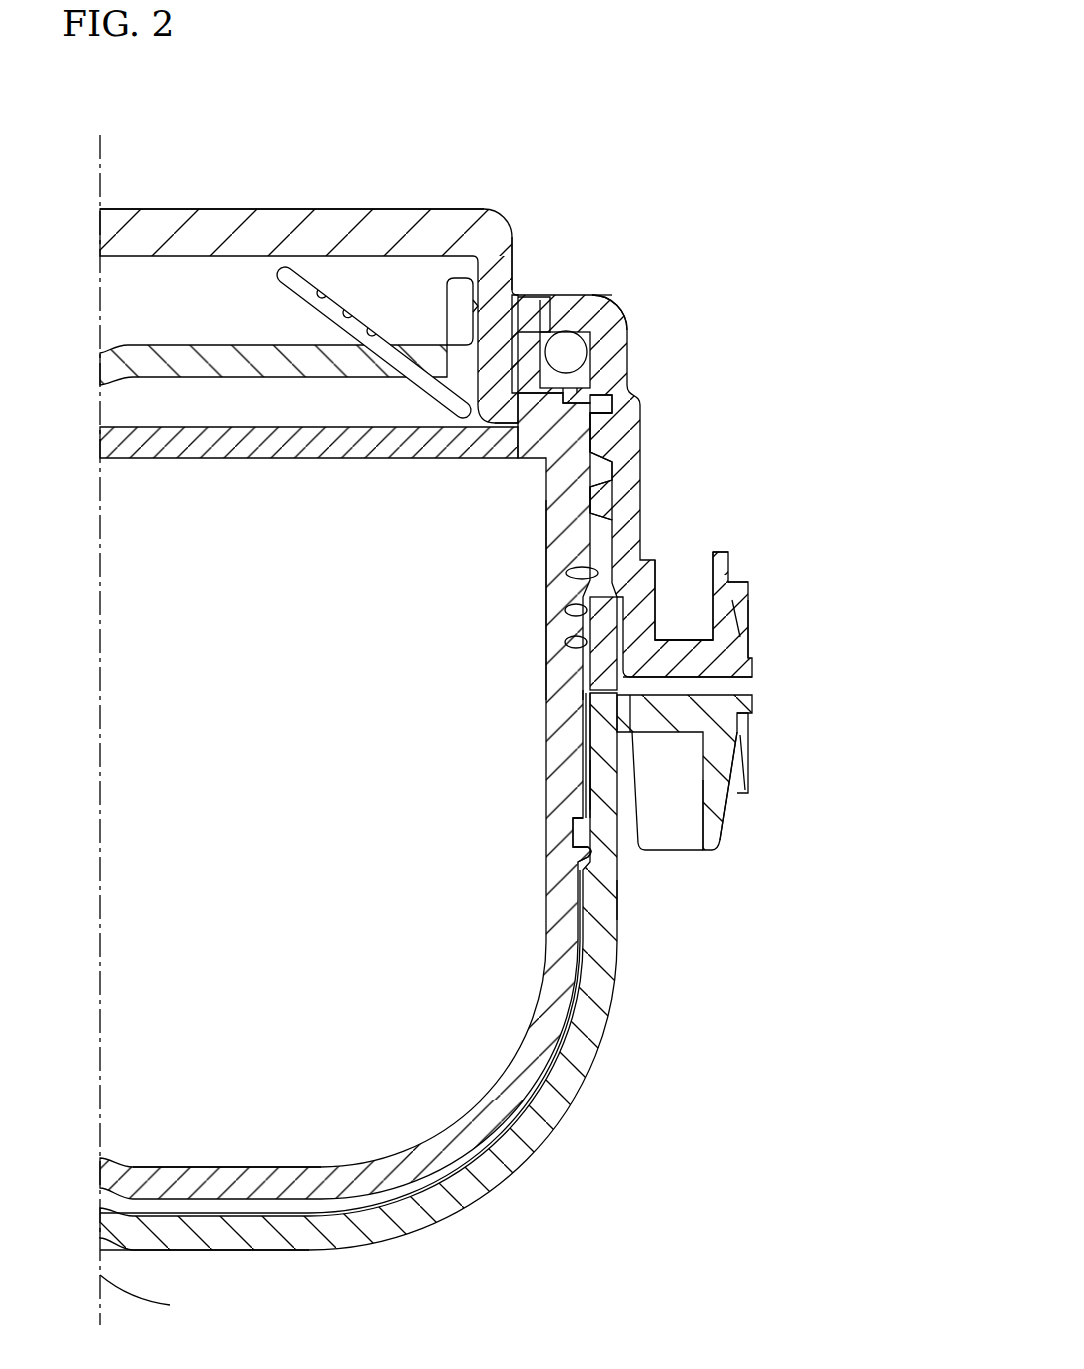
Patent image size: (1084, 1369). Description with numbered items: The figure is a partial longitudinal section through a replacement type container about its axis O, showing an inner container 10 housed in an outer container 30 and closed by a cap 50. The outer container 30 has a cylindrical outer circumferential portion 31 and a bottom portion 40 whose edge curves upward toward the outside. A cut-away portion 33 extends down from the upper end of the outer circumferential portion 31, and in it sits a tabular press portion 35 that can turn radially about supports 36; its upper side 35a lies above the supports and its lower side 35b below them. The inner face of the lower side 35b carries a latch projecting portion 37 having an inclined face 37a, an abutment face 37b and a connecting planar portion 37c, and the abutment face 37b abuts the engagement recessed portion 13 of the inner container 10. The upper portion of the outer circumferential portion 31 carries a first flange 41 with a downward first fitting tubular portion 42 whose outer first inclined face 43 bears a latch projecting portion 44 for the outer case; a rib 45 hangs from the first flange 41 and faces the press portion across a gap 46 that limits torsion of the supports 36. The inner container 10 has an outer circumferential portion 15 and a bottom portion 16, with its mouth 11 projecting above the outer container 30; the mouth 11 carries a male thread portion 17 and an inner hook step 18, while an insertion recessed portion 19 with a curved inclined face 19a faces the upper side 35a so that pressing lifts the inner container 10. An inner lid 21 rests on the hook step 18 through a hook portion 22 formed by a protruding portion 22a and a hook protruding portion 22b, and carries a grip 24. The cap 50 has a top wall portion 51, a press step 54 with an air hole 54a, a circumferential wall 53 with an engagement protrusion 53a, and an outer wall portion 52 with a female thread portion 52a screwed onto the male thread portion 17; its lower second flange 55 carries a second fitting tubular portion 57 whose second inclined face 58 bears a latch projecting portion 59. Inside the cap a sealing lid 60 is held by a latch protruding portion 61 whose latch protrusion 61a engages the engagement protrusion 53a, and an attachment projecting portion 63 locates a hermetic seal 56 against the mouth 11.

The inner container 10 is at (600, 556).
The mouth 11 is at (560, 535).
The engagement recessed portion 13 is at (583, 866).
The outer circumferential portion 15 is at (565, 574).
The bottom portion 16 is at (276, 1167).
The male thread portion 17 is at (605, 447).
The hook step 18 is at (565, 398).
The insertion recessed portion 19 is at (568, 612).
The inclined face 19a is at (566, 577).
The inner lid 21 is at (302, 458).
The hook portion 22 is at (598, 378).
The protruding portion 22a is at (520, 307).
The hook protruding portion 22b is at (592, 398).
The grip 24 is at (338, 295).
The outer container 30 is at (622, 936).
The outer circumferential portion 31 is at (618, 898).
The cut-away portion 33 is at (598, 690).
The tabular press portion 35 is at (722, 578).
The upper side 35a is at (690, 580).
The lower side 35b is at (745, 742).
The support 36 is at (598, 650).
The latch projecting portion 37 is at (737, 812).
The inclined face 37a is at (627, 807).
The abutment face 37b is at (582, 856).
The planar portion 37c is at (587, 838).
The bottom portion 40 is at (277, 1250).
The first flange 41 is at (760, 702).
The first fitting tubular portion 42 is at (718, 793).
The first inclined face 43 is at (720, 837).
The latch projecting portion 44 is at (600, 788).
The rib 45 is at (675, 748).
The gap 46 is at (590, 805).
The cap 50 is at (485, 194).
The top wall portion 51 is at (277, 232).
The outer wall portion 52 is at (612, 345).
The female thread portion 52a is at (607, 495).
The circumferential wall 53 is at (514, 280).
The engagement protrusion 53a is at (528, 395).
The press step 54 is at (585, 304).
The hole 54a is at (558, 305).
The second flange 55 is at (760, 634).
The hermetic seal 56 is at (610, 302).
The second fitting tubular portion 57 is at (738, 555).
The second inclined face 58 is at (752, 582).
The latch projecting portion 59 is at (745, 622).
The sealing lid 60 is at (270, 345).
The latch protruding portion 61 is at (447, 318).
The latch protrusion 61a is at (500, 275).
The attachment projecting portion 63 is at (576, 338).
The central axis O is at (149, 1297).